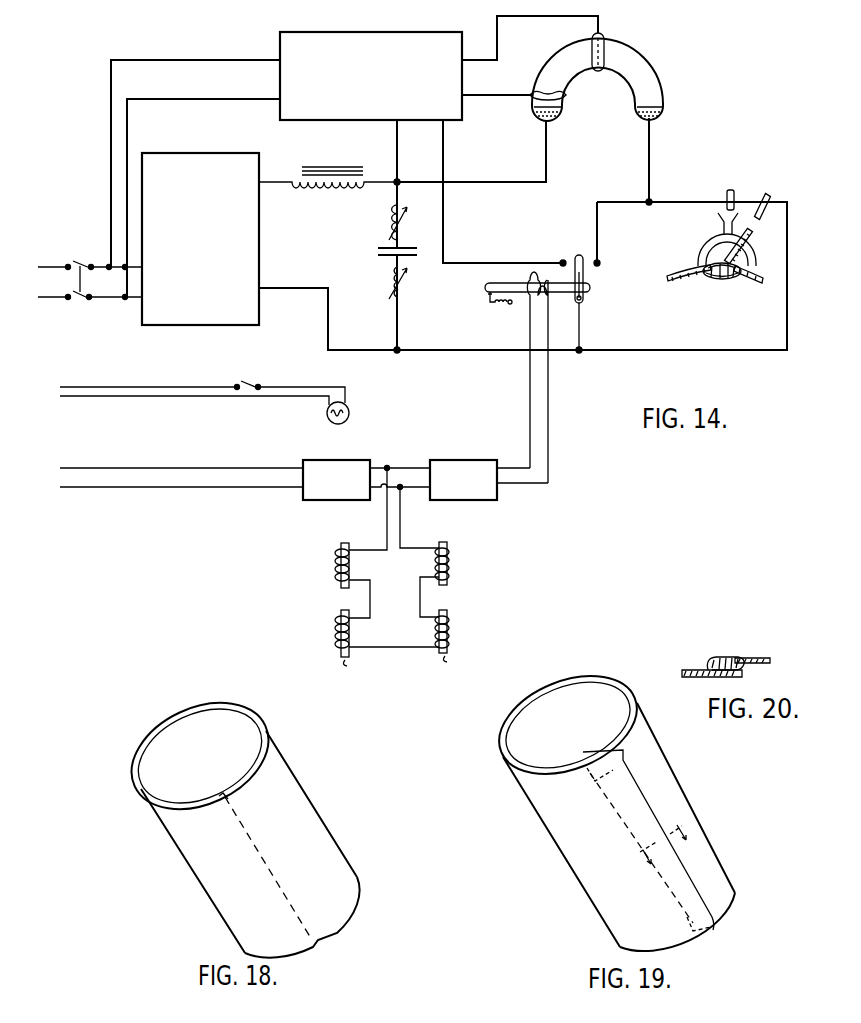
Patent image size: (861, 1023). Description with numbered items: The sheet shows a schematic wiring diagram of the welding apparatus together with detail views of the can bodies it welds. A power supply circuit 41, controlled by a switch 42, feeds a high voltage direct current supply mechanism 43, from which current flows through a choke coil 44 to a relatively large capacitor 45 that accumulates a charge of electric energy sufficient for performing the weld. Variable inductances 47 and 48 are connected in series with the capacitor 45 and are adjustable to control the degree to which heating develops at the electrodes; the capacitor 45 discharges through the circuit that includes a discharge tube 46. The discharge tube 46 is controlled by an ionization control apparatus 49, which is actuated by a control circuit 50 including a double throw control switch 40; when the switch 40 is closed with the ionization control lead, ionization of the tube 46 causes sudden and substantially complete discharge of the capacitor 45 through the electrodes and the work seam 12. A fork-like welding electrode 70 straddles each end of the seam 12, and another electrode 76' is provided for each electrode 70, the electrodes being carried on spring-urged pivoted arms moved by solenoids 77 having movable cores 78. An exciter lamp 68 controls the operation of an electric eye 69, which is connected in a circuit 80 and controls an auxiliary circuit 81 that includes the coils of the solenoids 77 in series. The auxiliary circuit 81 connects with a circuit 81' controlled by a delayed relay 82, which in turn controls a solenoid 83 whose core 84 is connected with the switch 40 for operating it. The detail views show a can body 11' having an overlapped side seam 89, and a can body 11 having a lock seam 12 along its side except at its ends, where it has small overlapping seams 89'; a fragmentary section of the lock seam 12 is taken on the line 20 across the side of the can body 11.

In FIG. 14, the ionization control apparatus 49 is at (329, 23).
In FIG. 14, the high voltage direct current supply mechanism 43 is at (188, 321).
In FIG. 14, the power supply circuit 41 is at (48, 297).
In FIG. 14, the switch 42 is at (90, 307).
In FIG. 14, the choke coil 44 is at (337, 196).
In FIG. 14, the variable inductance 47 is at (390, 221).
In FIG. 14, the capacitor 45 is at (378, 252).
In FIG. 14, the variable inductance 48 is at (391, 284).
In FIG. 14, the control circuit 50 is at (445, 223).
In FIG. 14, the discharge tube 46 is at (653, 77).
In FIG. 14, the control switch 40 is at (585, 268).
In FIG. 14, the core 84 is at (490, 283).
In FIG. 14, the solenoid 83 is at (530, 296).
In FIG. 14, the fork-like welding electrode 70 is at (708, 244).
In FIG. 14, the electrode 76' is at (751, 228).
In FIG. 14, the can body 11 is at (715, 285).
In FIG. 19, the can body 11 is at (610, 804).
In FIG. 20, the can body 11 is at (739, 658).
In FIG. 14, the lock seam 12 is at (716, 281).
In FIG. 19, the lock seam 12 is at (690, 890).
In FIG. 20, the lock seam 12 is at (731, 660).
In FIG. 14, the exciter lamp 68 is at (350, 413).
In FIG. 14, the circuit 80 is at (212, 470).
In FIG. 14, the electric eye 69 is at (327, 500).
In FIG. 14, the delayed relay 82 is at (484, 500).
In FIG. 14, the circuit 81' is at (410, 462).
In FIG. 14, the movable core 78 is at (340, 550).
In FIG. 14, the solenoid 77 is at (338, 573).
In FIG. 14, the auxiliary circuit 81 is at (394, 663).
In FIG. 18, the can body 11' is at (236, 820).
In FIG. 18, the overlapped side seam 89 is at (260, 853).
In FIG. 19, the overlapping seam 89' is at (664, 837).
In FIG. 19, the section line 20— 20 is at (671, 855).